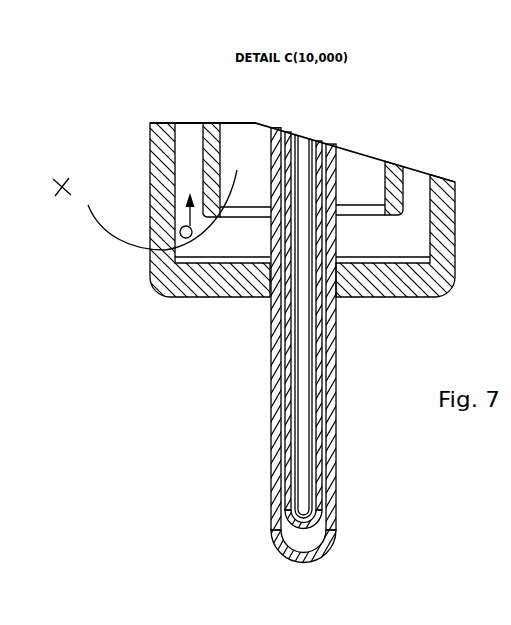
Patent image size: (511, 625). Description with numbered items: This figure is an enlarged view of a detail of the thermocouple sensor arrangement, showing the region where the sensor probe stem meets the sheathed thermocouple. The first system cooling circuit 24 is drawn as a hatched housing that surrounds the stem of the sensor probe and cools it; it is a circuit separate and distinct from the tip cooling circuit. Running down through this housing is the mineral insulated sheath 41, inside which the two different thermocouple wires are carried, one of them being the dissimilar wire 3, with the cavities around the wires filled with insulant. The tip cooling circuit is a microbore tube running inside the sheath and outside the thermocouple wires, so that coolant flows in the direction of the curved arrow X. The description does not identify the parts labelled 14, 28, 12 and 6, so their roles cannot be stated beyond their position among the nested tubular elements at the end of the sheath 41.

The first system cooling circuit 24 is at (152, 280).
The mineral insulated sheath 41 is at (273, 480).
The outer tube bottom 14 is at (300, 547).
The inner tube 28 is at (317, 492).
The inner tube bottom 12 is at (312, 521).
The innermost tube 6 is at (322, 428).
The dissimilar wire 3 is at (295, 432).